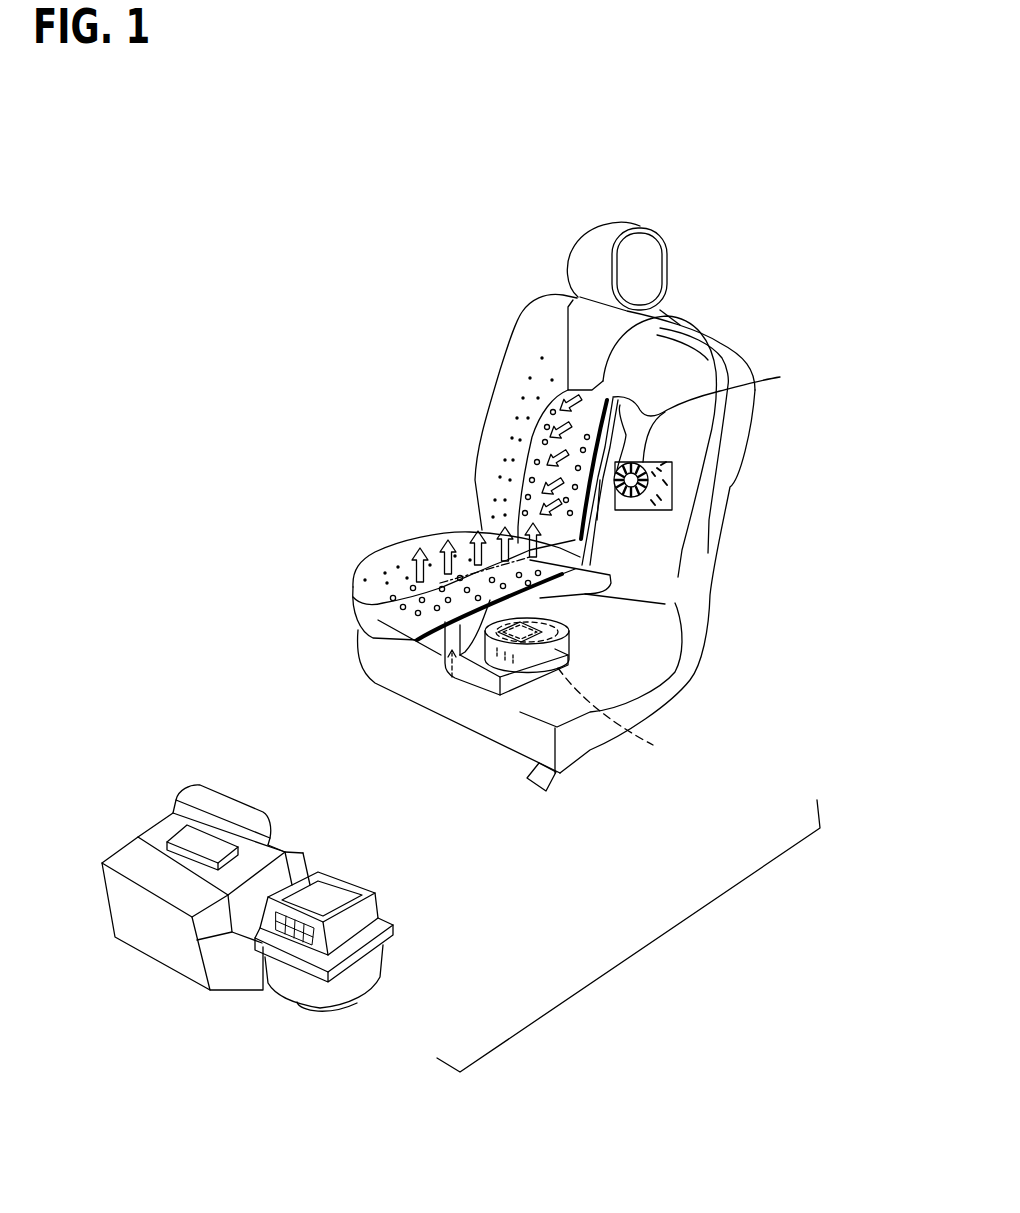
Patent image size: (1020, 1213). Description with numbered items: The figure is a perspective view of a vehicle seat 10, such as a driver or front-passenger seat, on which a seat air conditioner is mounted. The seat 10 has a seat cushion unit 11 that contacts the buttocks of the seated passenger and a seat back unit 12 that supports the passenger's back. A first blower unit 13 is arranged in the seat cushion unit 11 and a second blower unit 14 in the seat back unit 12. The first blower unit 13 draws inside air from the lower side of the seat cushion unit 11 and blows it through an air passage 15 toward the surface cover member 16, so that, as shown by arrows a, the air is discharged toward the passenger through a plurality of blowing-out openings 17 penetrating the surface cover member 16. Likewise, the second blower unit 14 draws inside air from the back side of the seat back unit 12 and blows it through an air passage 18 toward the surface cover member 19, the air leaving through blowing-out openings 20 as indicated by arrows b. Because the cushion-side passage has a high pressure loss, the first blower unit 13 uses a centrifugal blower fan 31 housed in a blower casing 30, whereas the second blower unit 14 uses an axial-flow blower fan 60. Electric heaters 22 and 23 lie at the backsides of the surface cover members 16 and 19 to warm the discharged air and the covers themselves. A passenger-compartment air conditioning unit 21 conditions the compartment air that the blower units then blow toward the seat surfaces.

The vehicle seat 10 is at (737, 487).
The seat cushion unit 11 is at (360, 562).
The seat back unit 12 is at (500, 364).
The first blower unit 13 is at (575, 658).
The second blower unit 14 is at (662, 453).
The air passage 15 is at (420, 630).
The surface cover member 16 is at (372, 552).
The blowing-out openings 17 is at (370, 592).
The air passage 18 is at (587, 520).
The surface cover member 19 is at (493, 435).
The blowing-out openings 20 is at (528, 418).
The passenger-compartment air conditioning unit 21 is at (313, 859).
The electric heater 22 is at (417, 640).
The electric heater 23 is at (668, 316).
The blower casing 30 is at (528, 676).
The centrifugal blower fan 31 is at (621, 713).
The blower fan 60 is at (712, 414).
The arrows a is at (456, 537).
The arrows b is at (562, 397).